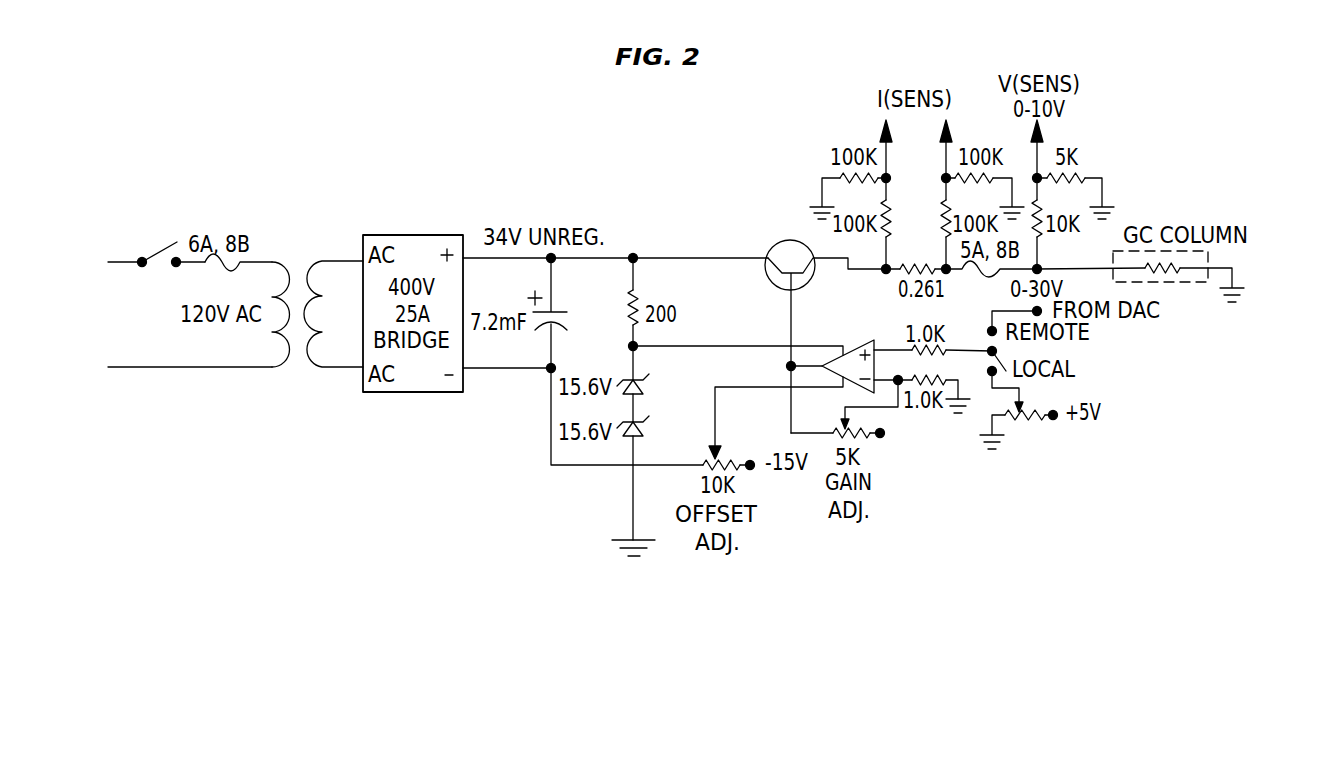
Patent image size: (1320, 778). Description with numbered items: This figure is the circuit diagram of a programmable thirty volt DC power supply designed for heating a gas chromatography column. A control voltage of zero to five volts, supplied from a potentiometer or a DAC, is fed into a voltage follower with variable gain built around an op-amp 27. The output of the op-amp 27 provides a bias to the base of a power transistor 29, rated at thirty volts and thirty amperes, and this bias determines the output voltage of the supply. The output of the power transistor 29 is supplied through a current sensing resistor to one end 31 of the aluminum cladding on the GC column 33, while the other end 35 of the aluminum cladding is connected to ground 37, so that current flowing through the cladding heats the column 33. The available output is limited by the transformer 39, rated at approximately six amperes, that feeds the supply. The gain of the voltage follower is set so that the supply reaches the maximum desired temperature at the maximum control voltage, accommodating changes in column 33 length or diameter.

The op-amp 27 is at (863, 342).
The power transistor 29 is at (777, 288).
The one end of the aluminum cladding 31 is at (1125, 268).
The GC column 33 is at (1165, 283).
The other end of the aluminum cladding 35 is at (1187, 268).
The ground 37 is at (1240, 287).
The transformer 39 is at (299, 263).